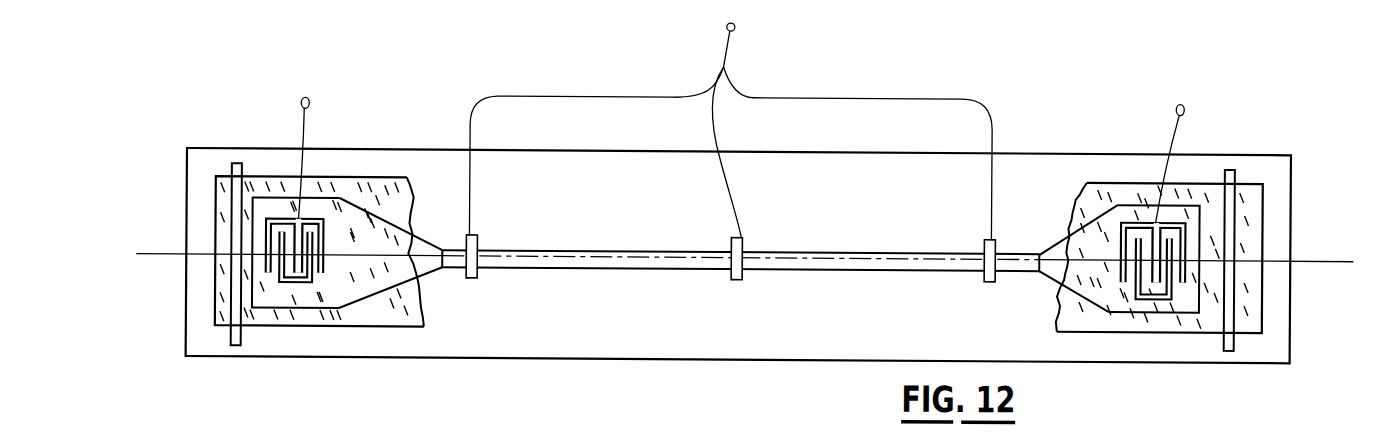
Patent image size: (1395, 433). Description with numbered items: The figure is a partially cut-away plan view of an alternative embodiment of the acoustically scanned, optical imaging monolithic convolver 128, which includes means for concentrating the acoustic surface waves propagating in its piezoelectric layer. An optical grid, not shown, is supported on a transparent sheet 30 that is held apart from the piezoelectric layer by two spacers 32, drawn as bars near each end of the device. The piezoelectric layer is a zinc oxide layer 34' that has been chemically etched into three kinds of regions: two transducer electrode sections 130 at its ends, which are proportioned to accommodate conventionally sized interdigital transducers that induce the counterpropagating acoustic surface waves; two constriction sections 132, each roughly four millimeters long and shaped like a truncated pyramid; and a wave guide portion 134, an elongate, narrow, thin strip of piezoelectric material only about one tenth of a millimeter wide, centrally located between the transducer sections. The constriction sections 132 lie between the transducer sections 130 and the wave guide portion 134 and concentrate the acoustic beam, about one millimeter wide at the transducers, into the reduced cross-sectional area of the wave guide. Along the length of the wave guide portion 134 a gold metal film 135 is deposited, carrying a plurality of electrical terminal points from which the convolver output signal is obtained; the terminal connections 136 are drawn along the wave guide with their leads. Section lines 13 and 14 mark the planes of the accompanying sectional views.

The section line 13- 13 is at (137, 218).
The section line 14- 14 is at (591, 124).
The transparent sheet 30 is at (357, 178).
The spacers 32 is at (236, 162).
The zinc oxide layer 34' is at (741, 290).
The monolithic convolver 128 is at (453, 102).
The transducer electrode sections 130 is at (302, 298).
The constriction sections 132 is at (388, 231).
The wave guide portion 134 is at (568, 264).
The metal film 135 is at (697, 263).
The clip 136 is at (481, 245).